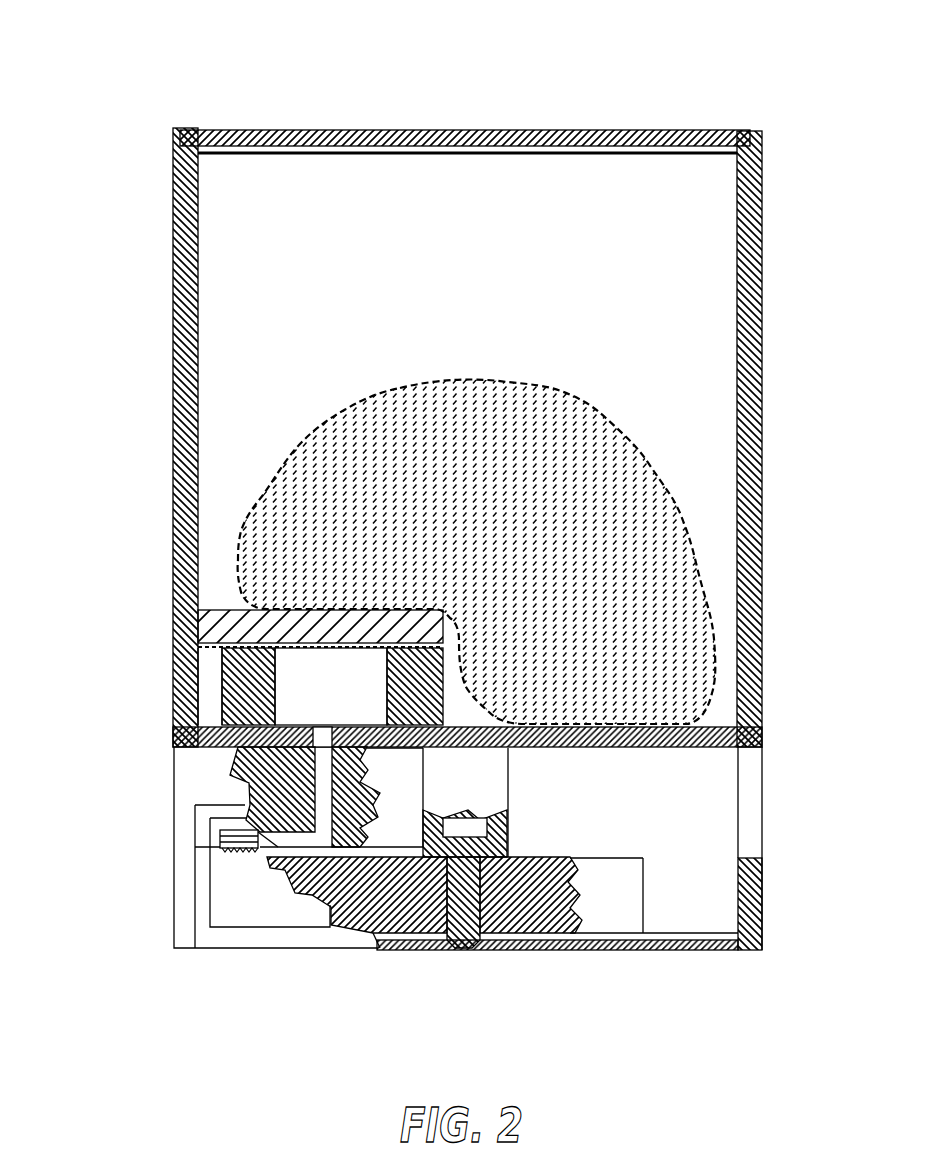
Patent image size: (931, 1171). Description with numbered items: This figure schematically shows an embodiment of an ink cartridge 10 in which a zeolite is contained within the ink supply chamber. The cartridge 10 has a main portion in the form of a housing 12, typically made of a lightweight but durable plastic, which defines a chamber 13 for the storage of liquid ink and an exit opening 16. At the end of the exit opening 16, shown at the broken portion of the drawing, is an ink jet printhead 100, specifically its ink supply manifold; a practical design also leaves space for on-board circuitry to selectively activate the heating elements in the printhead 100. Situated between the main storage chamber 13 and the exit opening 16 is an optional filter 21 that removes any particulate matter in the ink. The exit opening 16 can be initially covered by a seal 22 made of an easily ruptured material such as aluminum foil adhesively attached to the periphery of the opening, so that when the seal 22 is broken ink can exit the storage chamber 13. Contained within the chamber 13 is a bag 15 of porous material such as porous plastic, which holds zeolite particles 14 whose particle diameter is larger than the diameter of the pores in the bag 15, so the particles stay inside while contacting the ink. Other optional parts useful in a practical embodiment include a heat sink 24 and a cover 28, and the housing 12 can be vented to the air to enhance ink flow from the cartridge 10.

The ink cartridge 10 is at (386, 70).
The housing 12 is at (752, 413).
The chamber 13 is at (735, 275).
The zeolite particles 14 is at (403, 429).
The bag 15 is at (525, 388).
The exit opening 16 is at (323, 702).
The filter 21 is at (222, 630).
The seal 22 is at (197, 650).
The heat sink 24 is at (607, 920).
The cover 28 is at (503, 945).
The ink jet printhead 100 is at (240, 842).